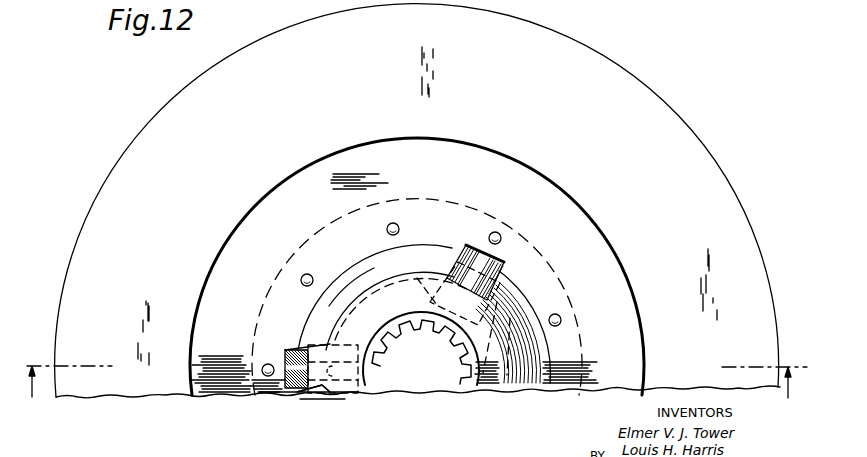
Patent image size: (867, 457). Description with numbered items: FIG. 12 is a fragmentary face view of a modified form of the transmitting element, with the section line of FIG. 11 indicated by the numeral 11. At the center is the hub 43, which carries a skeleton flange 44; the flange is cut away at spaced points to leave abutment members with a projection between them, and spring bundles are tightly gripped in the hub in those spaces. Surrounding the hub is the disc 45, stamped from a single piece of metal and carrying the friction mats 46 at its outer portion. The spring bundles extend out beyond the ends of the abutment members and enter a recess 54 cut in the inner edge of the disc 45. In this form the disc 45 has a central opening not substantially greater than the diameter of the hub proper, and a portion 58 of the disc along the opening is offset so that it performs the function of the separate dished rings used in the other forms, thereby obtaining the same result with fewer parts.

The friction mats 46 is at (121, 156).
The disc 45 is at (234, 242).
The hub 43 is at (377, 396).
The skeleton flange 44 is at (304, 404).
The recess 54 is at (288, 378).
The offset portion of the disc 58 is at (505, 316).
The section line 11- 11 is at (419, 391).